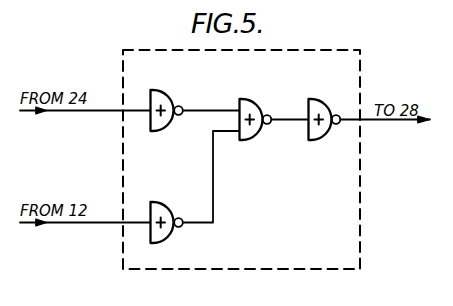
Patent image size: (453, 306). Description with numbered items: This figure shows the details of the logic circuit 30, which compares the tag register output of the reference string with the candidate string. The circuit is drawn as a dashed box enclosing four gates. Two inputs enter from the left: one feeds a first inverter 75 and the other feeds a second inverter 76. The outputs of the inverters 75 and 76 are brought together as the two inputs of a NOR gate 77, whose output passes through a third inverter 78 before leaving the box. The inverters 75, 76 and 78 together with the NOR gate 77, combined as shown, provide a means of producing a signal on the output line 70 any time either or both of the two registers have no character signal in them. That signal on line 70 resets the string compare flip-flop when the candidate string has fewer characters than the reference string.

The logic circuit 30 is at (328, 40).
The inverter 75 is at (158, 84).
The inverter 76 is at (152, 193).
The NOR gate 77 is at (246, 92).
The inverter 78 is at (315, 92).
The signal line 70 is at (365, 114).